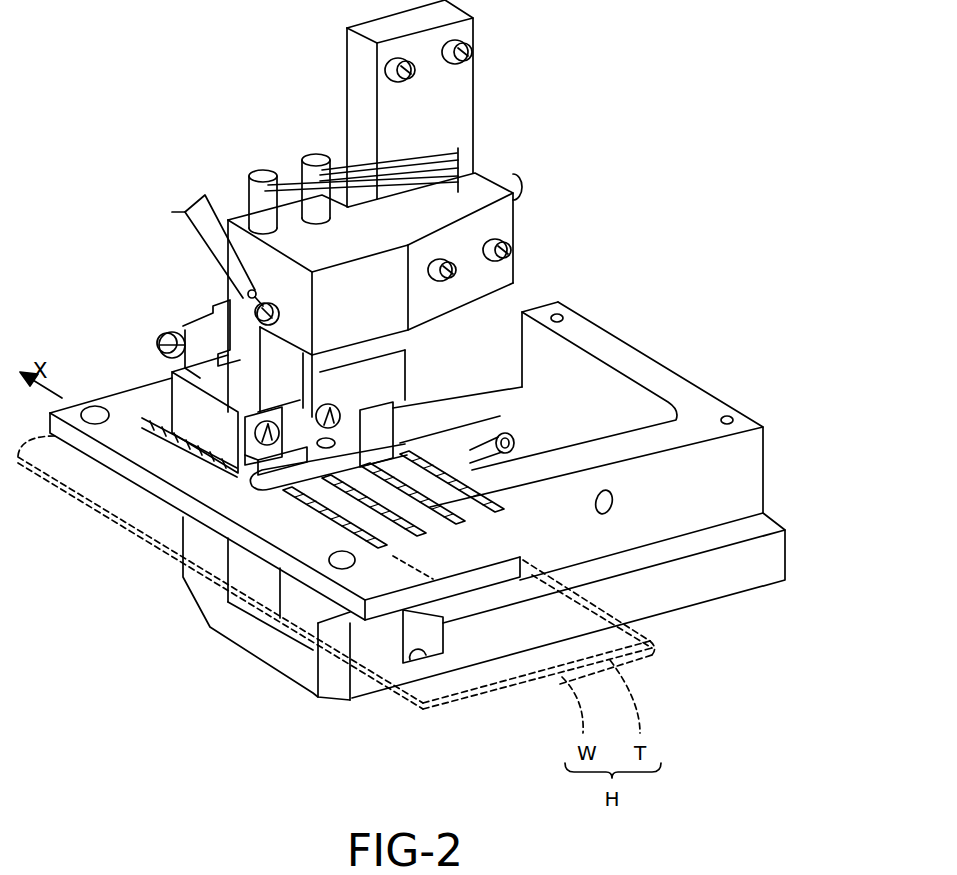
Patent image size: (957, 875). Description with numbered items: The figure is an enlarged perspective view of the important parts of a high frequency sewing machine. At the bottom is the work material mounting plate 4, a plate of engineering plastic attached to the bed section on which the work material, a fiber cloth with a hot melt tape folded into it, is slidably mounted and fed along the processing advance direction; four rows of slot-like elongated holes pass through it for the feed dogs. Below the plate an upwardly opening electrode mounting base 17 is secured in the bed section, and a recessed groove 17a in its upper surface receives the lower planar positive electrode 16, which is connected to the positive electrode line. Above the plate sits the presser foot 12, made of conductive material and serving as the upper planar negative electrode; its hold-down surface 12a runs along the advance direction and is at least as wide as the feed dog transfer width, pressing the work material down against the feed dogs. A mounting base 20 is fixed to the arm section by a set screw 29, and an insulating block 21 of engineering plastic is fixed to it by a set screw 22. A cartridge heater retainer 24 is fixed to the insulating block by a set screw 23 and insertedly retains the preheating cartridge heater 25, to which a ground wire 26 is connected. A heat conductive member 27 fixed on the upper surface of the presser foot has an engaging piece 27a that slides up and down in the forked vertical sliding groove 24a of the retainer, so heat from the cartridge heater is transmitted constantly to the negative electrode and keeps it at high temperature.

The work material mounting plate 4 is at (333, 588).
The presser foot 12 is at (232, 515).
The hold-down surface 12a is at (247, 477).
The lower planar positive electrode 16 is at (555, 445).
The electrode mounting base 17 is at (441, 501).
The recessed groove 17a is at (247, 570).
The mounting base 20 is at (443, 123).
The insulating block 21 is at (447, 293).
The set screw 22 is at (450, 271).
The set screw 23 is at (506, 254).
The cartridge heater retainer 24 is at (304, 274).
The forked vertical sliding groove 24a is at (312, 365).
The preheating cartridge heater 25 is at (259, 172).
The ground wire 26 is at (220, 226).
The heat conductive member 27 is at (340, 458).
The engaging piece 27a is at (340, 386).
The set screw 29 is at (416, 73).